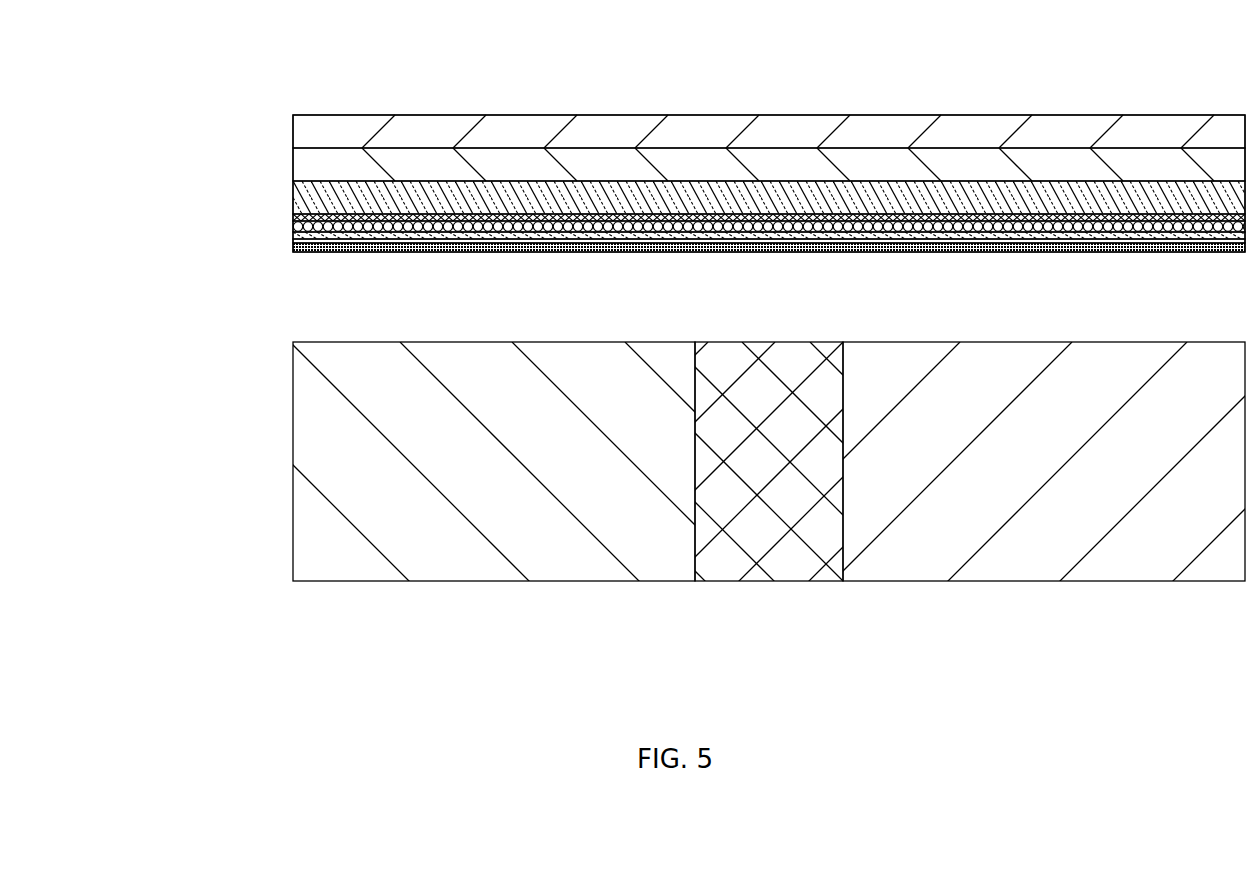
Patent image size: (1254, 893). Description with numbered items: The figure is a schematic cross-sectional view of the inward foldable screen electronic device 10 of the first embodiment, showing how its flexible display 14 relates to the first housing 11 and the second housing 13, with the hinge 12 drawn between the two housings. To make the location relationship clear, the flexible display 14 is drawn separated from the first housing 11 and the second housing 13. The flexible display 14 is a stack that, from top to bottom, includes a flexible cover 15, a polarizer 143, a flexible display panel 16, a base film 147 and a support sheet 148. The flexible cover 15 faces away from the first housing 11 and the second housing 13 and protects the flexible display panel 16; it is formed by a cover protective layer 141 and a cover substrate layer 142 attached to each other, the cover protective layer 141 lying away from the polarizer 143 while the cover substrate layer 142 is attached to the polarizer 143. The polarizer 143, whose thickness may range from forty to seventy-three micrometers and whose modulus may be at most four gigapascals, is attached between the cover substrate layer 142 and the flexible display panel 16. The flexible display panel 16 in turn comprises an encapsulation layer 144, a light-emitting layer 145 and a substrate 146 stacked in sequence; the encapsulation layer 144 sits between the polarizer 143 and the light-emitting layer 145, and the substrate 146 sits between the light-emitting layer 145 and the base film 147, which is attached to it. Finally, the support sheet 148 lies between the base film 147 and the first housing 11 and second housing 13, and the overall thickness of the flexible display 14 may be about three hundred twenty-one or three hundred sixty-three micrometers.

The inward foldable screen electronic device 10 is at (115, 46).
The first housing 11 is at (1039, 540).
The hinge 12 is at (768, 540).
The second housing 13 is at (514, 540).
The flexible display 14 is at (158, 330).
The flexible cover 15 is at (206, 113).
The flexible display panel 16 is at (206, 201).
The cover protective layer 141 is at (303, 130).
The cover substrate layer 142 is at (303, 162).
The polarizer 143 is at (300, 195).
The encapsulation layer 144 is at (300, 218).
The light-emitting layer 145 is at (293, 226).
The substrate 146 is at (293, 234).
The base film 147 is at (293, 240).
The support sheet 148 is at (293, 247).